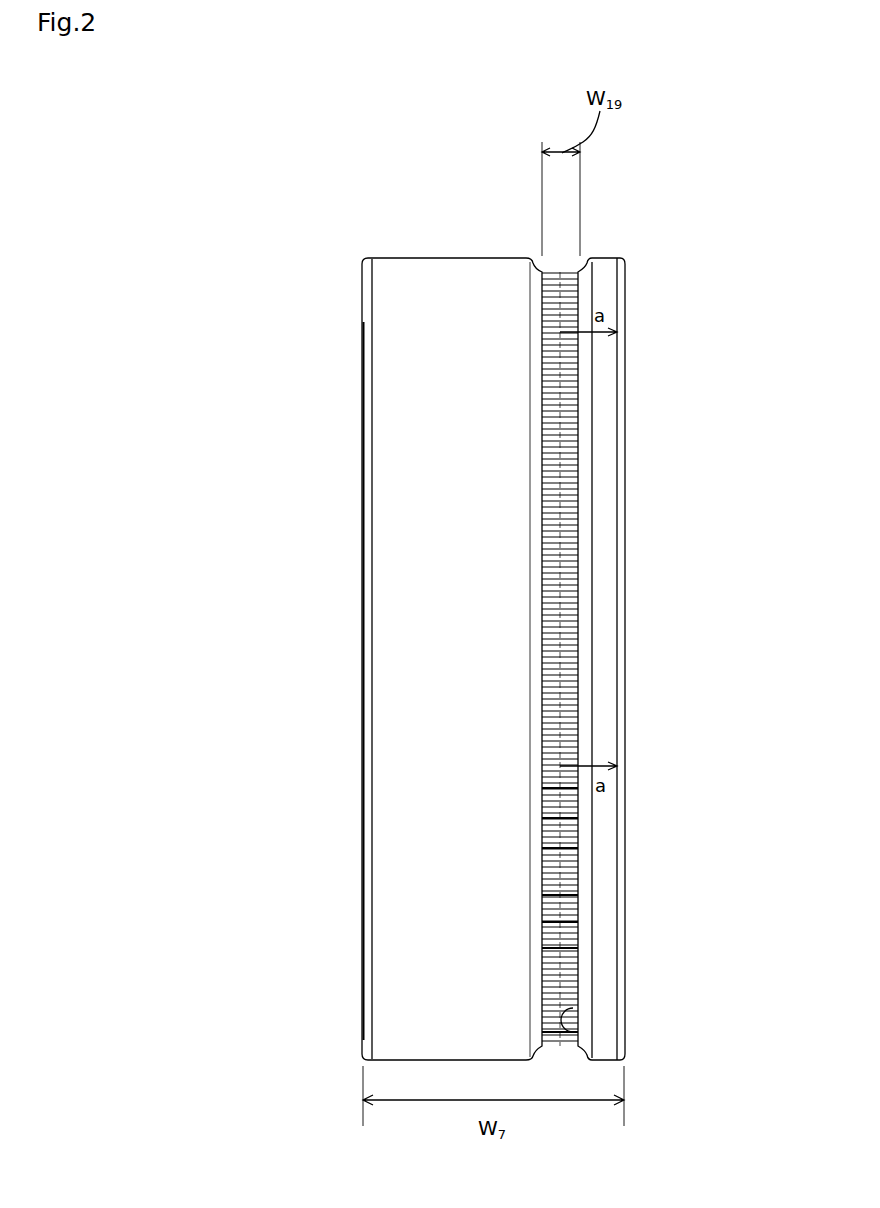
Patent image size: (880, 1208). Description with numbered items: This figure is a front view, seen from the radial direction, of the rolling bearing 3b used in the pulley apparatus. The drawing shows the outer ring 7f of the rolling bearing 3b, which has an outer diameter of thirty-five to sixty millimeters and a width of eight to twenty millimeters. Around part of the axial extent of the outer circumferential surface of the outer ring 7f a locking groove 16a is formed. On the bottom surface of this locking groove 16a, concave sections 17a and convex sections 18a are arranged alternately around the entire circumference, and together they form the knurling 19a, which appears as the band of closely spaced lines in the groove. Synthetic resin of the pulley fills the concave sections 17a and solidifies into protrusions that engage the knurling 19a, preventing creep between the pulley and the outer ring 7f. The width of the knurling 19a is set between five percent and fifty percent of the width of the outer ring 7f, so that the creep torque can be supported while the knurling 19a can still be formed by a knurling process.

The rolling bearing 3b is at (328, 229).
The knurling 19a is at (558, 272).
The outer ring 7f is at (603, 460).
The concave sections 17a is at (542, 848).
The convex sections 18a is at (563, 895).
The locking groove 16a is at (578, 1032).